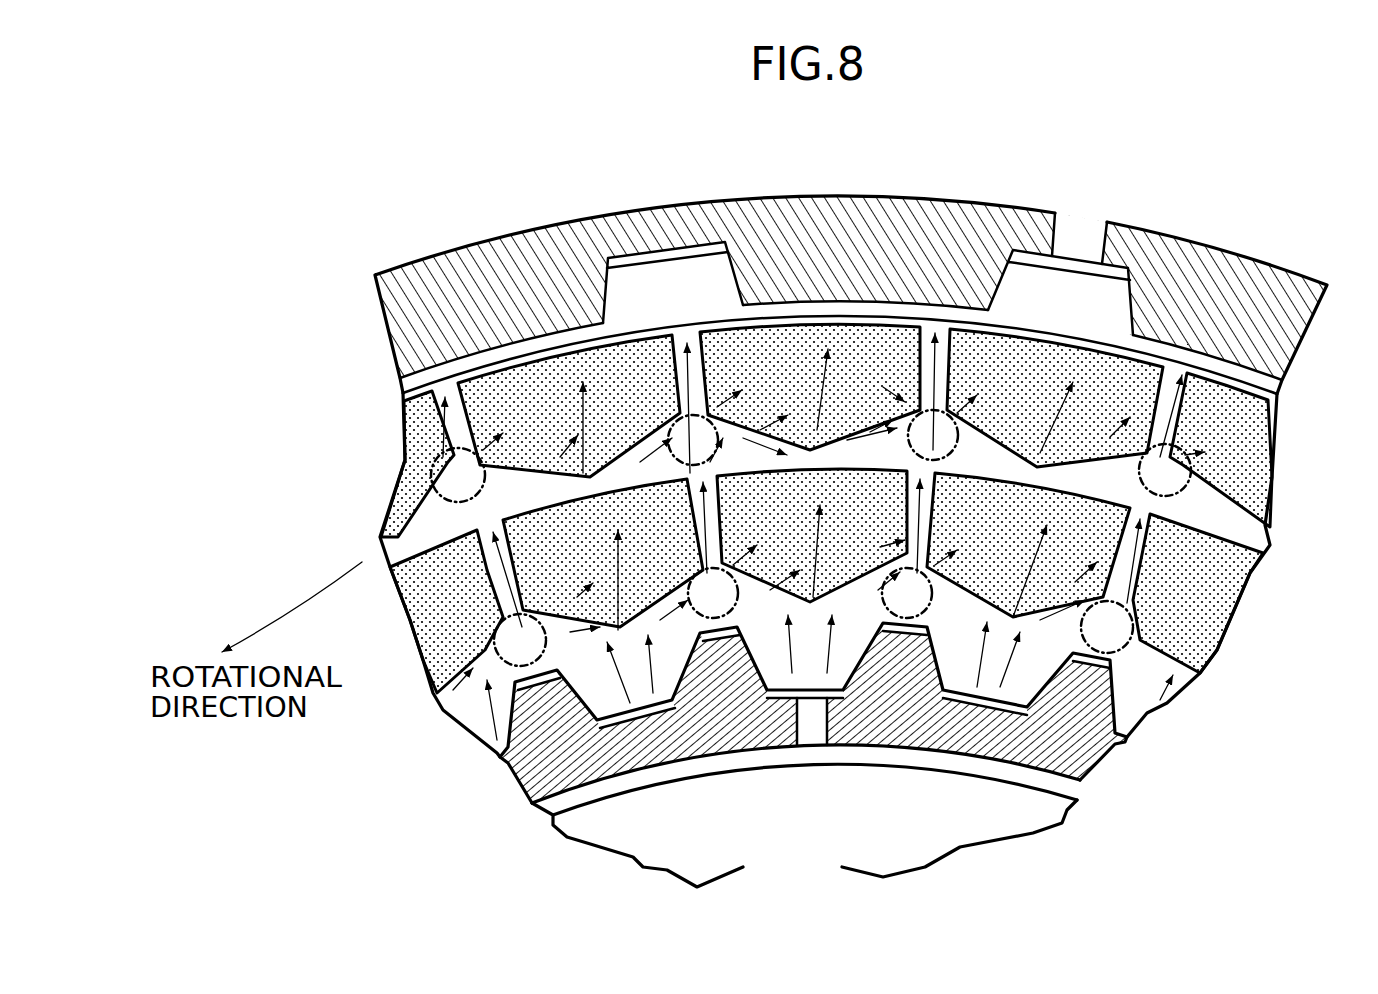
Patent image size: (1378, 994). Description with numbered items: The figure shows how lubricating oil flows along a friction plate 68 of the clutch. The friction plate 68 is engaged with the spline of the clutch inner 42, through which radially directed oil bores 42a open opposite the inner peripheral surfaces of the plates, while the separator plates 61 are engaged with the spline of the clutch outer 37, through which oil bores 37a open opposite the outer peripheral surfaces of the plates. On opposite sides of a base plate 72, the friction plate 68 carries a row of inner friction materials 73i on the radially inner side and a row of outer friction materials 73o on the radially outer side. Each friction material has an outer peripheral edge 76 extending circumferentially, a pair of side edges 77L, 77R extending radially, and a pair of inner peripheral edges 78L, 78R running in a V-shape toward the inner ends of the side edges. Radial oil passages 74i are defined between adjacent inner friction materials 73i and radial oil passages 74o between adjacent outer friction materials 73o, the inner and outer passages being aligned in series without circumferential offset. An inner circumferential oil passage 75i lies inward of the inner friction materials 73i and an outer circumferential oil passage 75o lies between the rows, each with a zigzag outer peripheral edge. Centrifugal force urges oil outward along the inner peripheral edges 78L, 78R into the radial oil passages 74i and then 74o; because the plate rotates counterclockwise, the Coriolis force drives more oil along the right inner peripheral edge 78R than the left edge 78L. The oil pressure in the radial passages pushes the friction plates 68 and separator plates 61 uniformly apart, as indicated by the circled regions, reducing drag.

The clutch outer 37 is at (862, 192).
The oil bores 37a is at (1068, 238).
The separator plates 61 is at (677, 273).
The friction plates 68 is at (652, 321).
The base plate 72 is at (1027, 330).
The clutch inner 42 is at (858, 746).
The oil bores 42a is at (803, 722).
The outer friction materials 73o is at (548, 450).
The outer radial oil passages 74o is at (660, 355).
The outer circumferential oil passage 75o is at (806, 420).
The inner friction materials 73i is at (572, 550).
The inner radial oil passages 74i is at (692, 522).
The inner circumferential oil passage 75i is at (557, 620).
The outer peripheral edge 76 is at (812, 328).
The left side edge 77L is at (703, 362).
The right side edge 77R is at (918, 366).
The left inner peripheral edge 78L is at (770, 440).
The right inner peripheral edge 78R is at (850, 440).